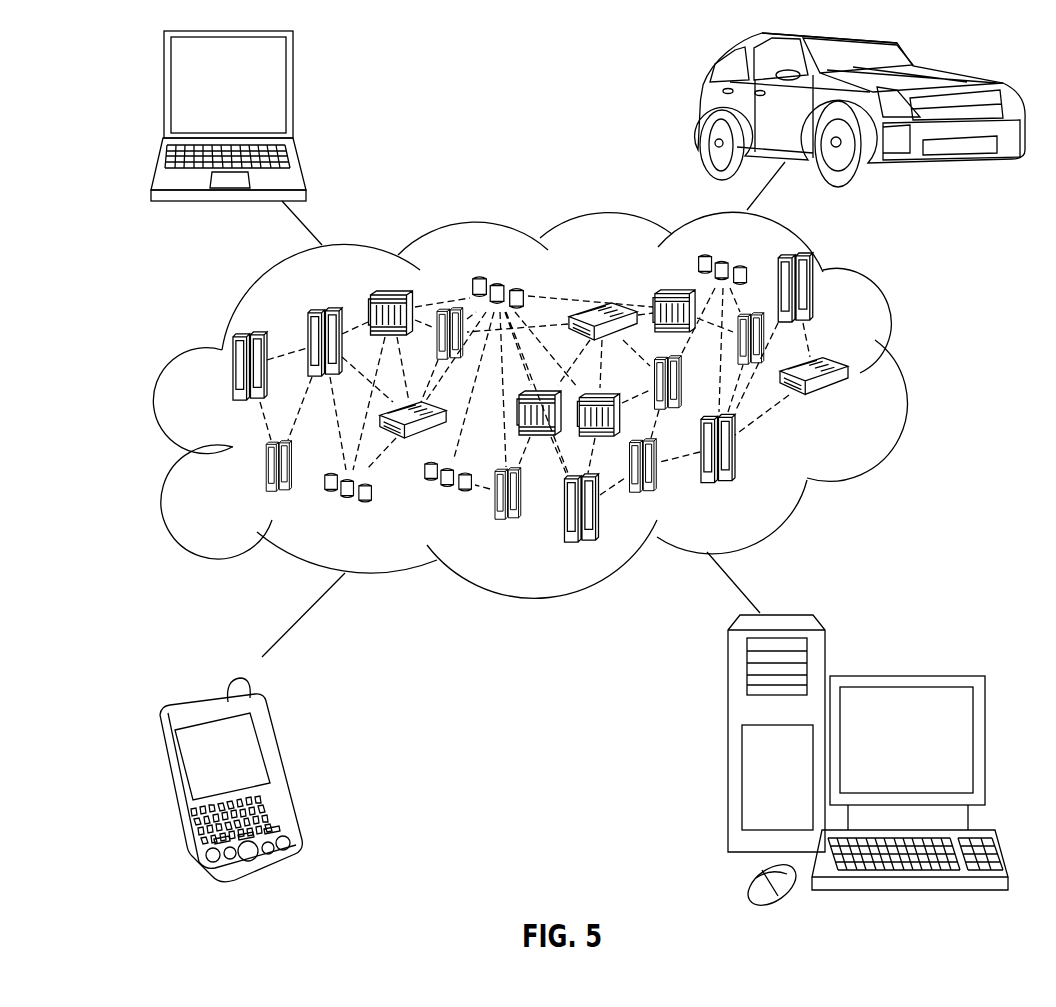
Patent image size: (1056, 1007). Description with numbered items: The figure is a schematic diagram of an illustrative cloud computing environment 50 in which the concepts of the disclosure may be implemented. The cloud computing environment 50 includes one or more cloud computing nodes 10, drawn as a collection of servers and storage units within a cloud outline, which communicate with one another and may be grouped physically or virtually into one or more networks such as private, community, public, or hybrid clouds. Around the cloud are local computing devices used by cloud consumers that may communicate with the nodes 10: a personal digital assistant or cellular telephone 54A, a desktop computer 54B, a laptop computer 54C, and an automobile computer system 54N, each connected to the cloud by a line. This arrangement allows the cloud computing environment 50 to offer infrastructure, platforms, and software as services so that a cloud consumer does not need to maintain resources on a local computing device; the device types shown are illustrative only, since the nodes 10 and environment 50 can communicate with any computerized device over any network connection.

The cloud computing nodes 10 is at (849, 411).
The cloud computing environment 50 is at (905, 375).
The personal digital assistant (PDA) or cellular telephone 54A is at (283, 772).
The desktop computer 54B is at (902, 675).
The laptop computer 54C is at (293, 91).
The automobile computer system 54N is at (700, 110).